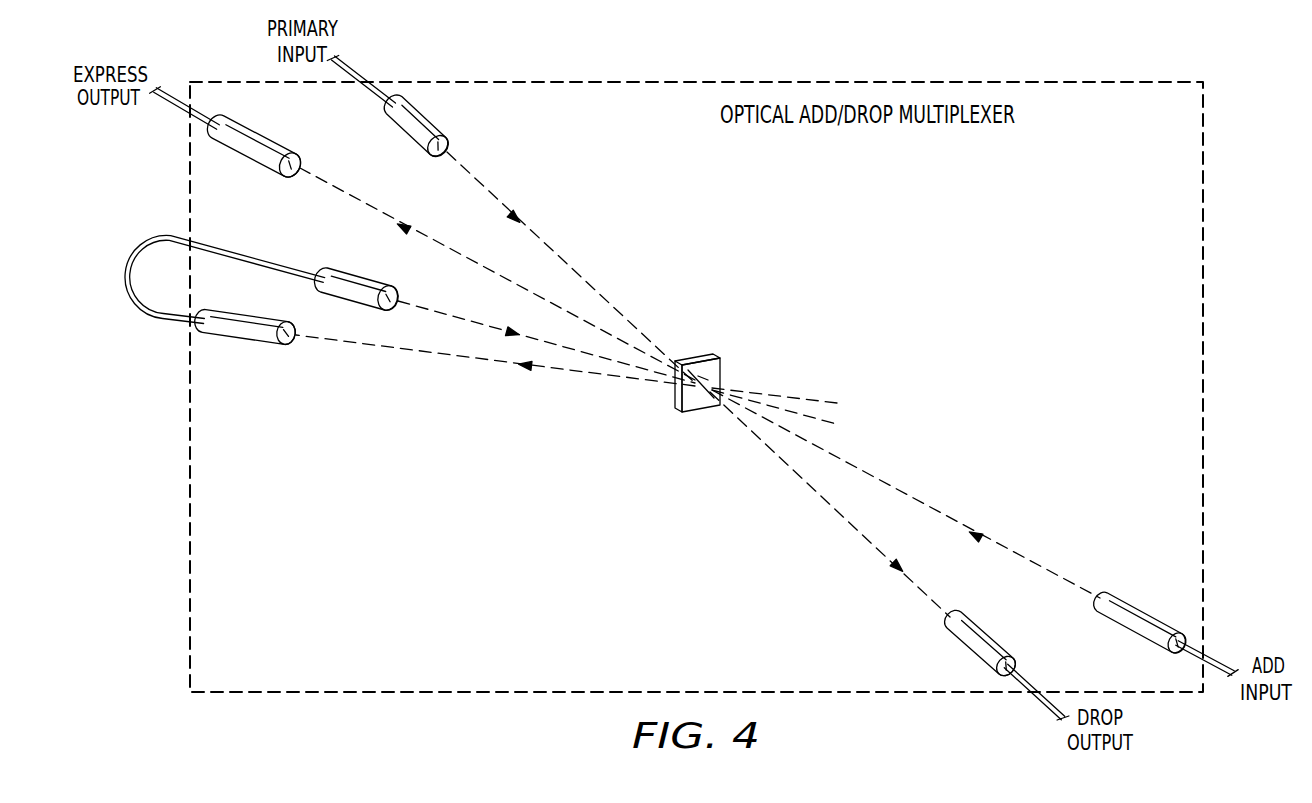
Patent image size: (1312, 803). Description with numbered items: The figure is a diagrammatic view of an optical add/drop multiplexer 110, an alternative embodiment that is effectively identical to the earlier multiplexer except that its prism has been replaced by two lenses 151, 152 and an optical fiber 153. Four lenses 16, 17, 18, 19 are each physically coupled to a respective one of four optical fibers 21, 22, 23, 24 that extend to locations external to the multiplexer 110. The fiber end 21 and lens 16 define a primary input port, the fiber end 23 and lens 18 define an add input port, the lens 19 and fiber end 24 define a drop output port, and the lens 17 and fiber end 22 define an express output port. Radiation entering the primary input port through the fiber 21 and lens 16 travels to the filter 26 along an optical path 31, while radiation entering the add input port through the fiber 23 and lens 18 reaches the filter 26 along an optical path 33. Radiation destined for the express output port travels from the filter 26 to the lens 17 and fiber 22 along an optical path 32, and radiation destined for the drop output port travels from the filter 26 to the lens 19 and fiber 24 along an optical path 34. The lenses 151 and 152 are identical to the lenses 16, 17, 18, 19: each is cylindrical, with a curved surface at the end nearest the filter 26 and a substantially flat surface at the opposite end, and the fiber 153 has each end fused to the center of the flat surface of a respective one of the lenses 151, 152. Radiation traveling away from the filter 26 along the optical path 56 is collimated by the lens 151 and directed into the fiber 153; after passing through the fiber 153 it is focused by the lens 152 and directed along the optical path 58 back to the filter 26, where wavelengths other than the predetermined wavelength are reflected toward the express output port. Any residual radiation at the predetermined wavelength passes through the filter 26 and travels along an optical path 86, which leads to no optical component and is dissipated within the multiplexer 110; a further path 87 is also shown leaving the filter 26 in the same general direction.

The optical add/drop multiplexer 110 is at (948, 60).
The lens 16 is at (400, 133).
The lens 17 is at (247, 160).
The lens 18 is at (1140, 612).
The lens 19 is at (963, 648).
The optical fiber 21 is at (365, 68).
The optical fiber 22 is at (178, 115).
The optical fiber 23 is at (1213, 655).
The optical fiber 24 is at (1028, 677).
The filter 26 is at (698, 362).
The optical path 31 is at (485, 188).
The optical path 32 is at (327, 183).
The optical path 33 is at (1045, 572).
The optical path 34 is at (920, 590).
The optical path 56 is at (575, 370).
The optical path 58 is at (448, 315).
The optical path 86 is at (813, 418).
The transmitted beam 87 is at (817, 400).
The lens 151 is at (240, 343).
The lens 152 is at (360, 278).
The optical fiber 153 is at (145, 240).